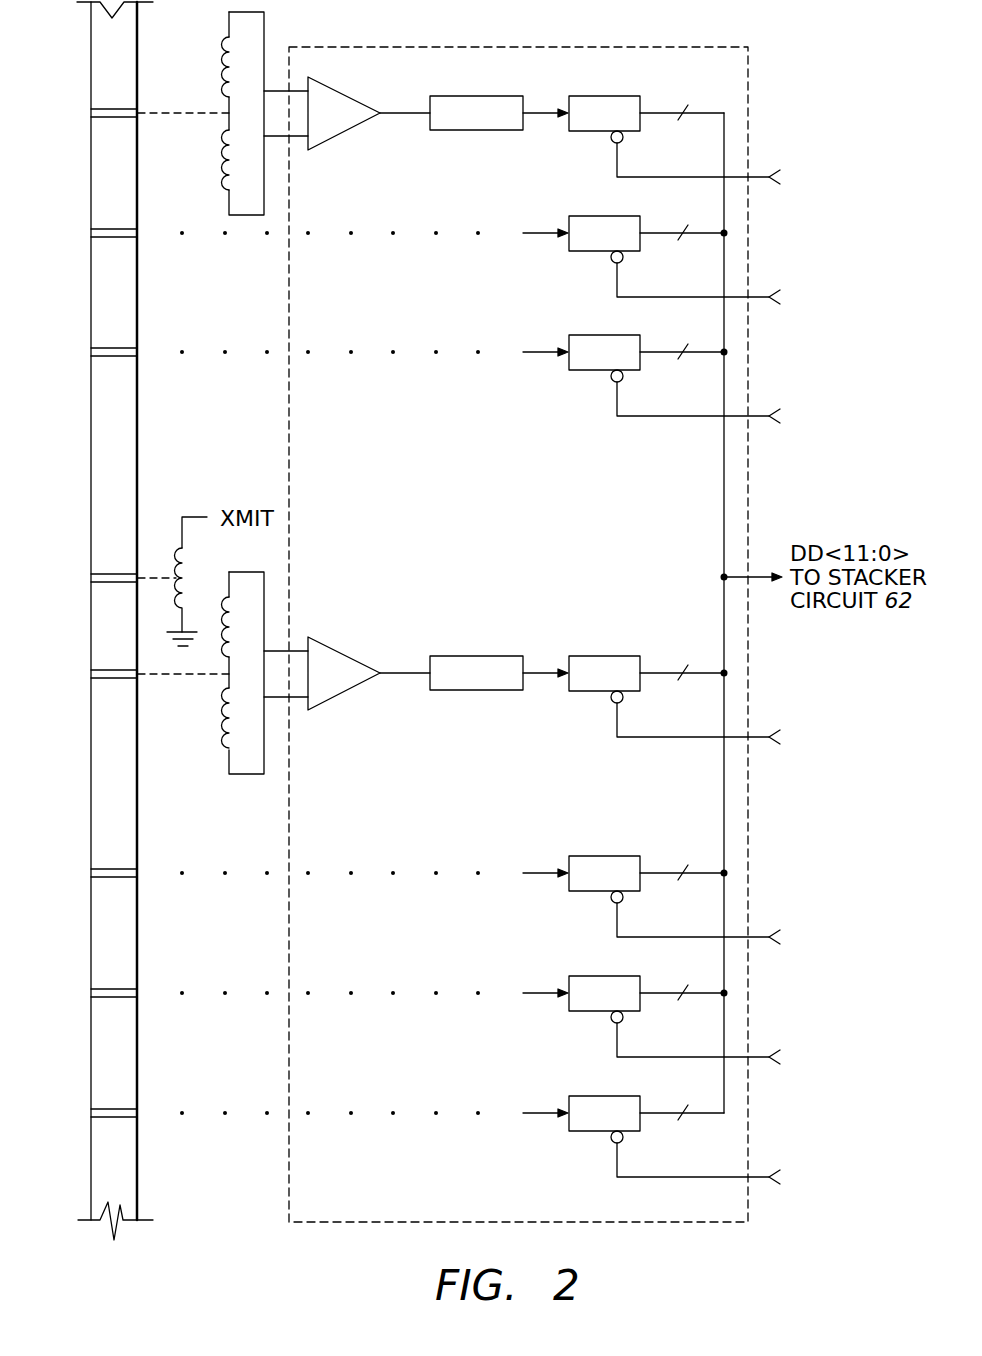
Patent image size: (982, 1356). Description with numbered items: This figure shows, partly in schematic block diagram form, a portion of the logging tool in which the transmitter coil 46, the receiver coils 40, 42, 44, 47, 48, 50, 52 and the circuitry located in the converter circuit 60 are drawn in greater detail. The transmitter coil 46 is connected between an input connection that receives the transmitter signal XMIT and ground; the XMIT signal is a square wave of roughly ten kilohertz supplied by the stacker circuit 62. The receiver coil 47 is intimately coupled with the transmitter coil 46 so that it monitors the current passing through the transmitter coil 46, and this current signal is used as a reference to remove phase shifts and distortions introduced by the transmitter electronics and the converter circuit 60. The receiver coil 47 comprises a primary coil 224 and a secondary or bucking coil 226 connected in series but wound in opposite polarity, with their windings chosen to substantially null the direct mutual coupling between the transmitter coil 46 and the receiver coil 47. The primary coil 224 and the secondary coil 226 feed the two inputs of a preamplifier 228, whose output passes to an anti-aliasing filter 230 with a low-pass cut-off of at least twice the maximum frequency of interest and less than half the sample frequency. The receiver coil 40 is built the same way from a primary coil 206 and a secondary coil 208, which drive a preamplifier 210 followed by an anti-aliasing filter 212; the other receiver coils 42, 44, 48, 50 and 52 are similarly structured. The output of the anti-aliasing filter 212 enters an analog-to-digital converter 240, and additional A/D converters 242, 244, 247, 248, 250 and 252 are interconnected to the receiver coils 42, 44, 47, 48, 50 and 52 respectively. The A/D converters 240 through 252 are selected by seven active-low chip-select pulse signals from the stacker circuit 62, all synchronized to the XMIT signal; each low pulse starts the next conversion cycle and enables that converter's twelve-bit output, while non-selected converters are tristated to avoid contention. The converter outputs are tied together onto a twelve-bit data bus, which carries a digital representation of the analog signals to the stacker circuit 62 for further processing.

The receiver coil 40 is at (91, 113).
The receiver coil 42 is at (91, 233).
The receiver coil 44 is at (91, 352).
The transmitter coil 46 is at (91, 578).
The receiver coil 47 is at (91, 674).
The receiver coil 48 is at (91, 873).
The receiver coil 50 is at (91, 993).
The receiver coil 52 is at (91, 1113).
The converter circuit 60 is at (683, 47).
The stacker circuit 62 is at (852, 677).
The primary coil 206 is at (221, 68).
The secondary coil 208 is at (221, 162).
The preamplifier 210 is at (335, 90).
The anti-aliasing filter 212 is at (447, 96).
The primary coil 224 is at (220, 637).
The secondary coil 226 is at (221, 733).
The preamplifier 228 is at (335, 650).
The anti-aliasing filter 230 is at (447, 656).
The analog-to-digital converter 240 is at (582, 132).
The analog-to-digital converter 242 is at (582, 252).
The analog-to-digital converter 244 is at (582, 371).
The analog-to-digital converter 247 is at (582, 692).
The analog-to-digital converter 248 is at (582, 892).
The analog-to-digital converter 250 is at (582, 1012).
The analog-to-digital converter 252 is at (582, 1132).